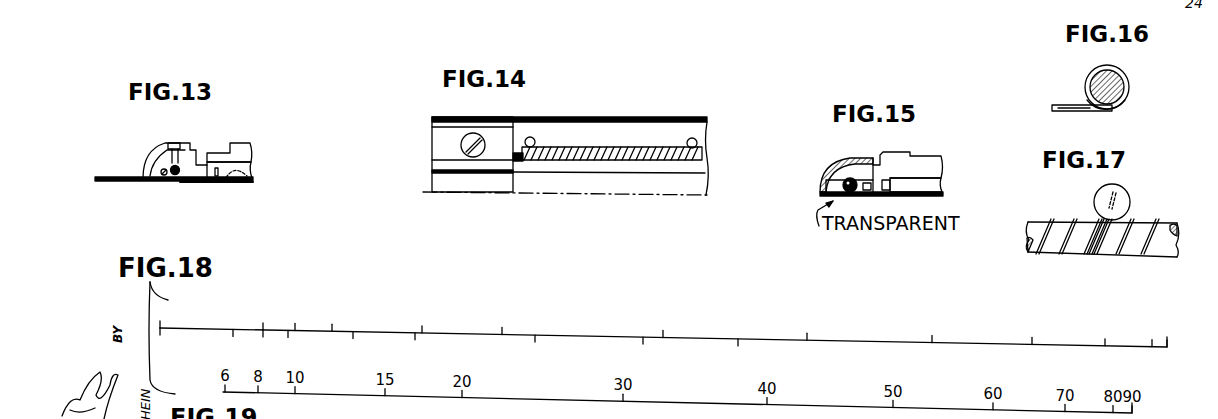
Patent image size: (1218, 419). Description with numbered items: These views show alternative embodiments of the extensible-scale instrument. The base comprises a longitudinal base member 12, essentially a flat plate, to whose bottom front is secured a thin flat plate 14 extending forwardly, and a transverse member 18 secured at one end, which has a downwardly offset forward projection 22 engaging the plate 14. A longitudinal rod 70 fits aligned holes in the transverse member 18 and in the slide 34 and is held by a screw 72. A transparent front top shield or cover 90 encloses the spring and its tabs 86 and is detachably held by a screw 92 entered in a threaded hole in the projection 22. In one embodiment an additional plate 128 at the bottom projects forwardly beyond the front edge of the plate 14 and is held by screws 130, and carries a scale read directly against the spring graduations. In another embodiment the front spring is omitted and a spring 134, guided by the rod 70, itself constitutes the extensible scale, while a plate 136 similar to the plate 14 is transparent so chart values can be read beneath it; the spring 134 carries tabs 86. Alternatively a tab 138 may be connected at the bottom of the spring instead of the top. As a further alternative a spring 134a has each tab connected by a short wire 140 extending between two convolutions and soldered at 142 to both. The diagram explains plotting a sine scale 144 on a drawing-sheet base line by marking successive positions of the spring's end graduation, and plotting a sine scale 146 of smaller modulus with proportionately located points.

In FIG. 13, the base member 12 is at (256, 171).
In FIG. 15, the base member 12 is at (940, 192).
In FIG. 13, the thin flat plate 14 is at (181, 183).
In FIG. 13, the transverse member 18 is at (256, 144).
In FIG. 14, the forward projection 22 is at (440, 142).
In FIG. 15, the slide 34 is at (938, 154).
In FIG. 14, the longitudinal rod 70 is at (593, 160).
In FIG. 16, the longitudinal rod 70 is at (1119, 82).
In FIG. 17, the longitudinal rod 70 is at (1164, 252).
In FIG. 13, the screw 72 is at (169, 175).
In FIG. 14, the tab 86 is at (690, 138).
In FIG. 13, the front top shield or cover 90 is at (148, 156).
In FIG. 15, the front top shield or cover 90 is at (840, 164).
In FIG. 13, the screw 92 is at (190, 145).
In FIG. 13, the additional plate 128 is at (112, 182).
In FIG. 13, the screw 130 is at (243, 183).
In FIG. 14, the spring 134 is at (572, 145).
In FIG. 15, the spring 134 is at (822, 187).
In FIG. 16, the spring 134 is at (1089, 72).
In FIG. 17, the spring 134a is at (1067, 230).
In FIG. 14, the transparent plate 136 is at (624, 120).
In FIG. 15, the transparent plate 136 is at (822, 192).
In FIG. 16, the tab 138 is at (1057, 104).
In FIG. 16, the short wire 140 is at (1112, 110).
In FIG. 17, the short wire 140 is at (1131, 200).
In FIG. 17, the solder connection 142 is at (1081, 254).
In FIG. 18, the sine scale 144 is at (233, 328).
In FIG. 18, the sine scale 146 is at (233, 331).